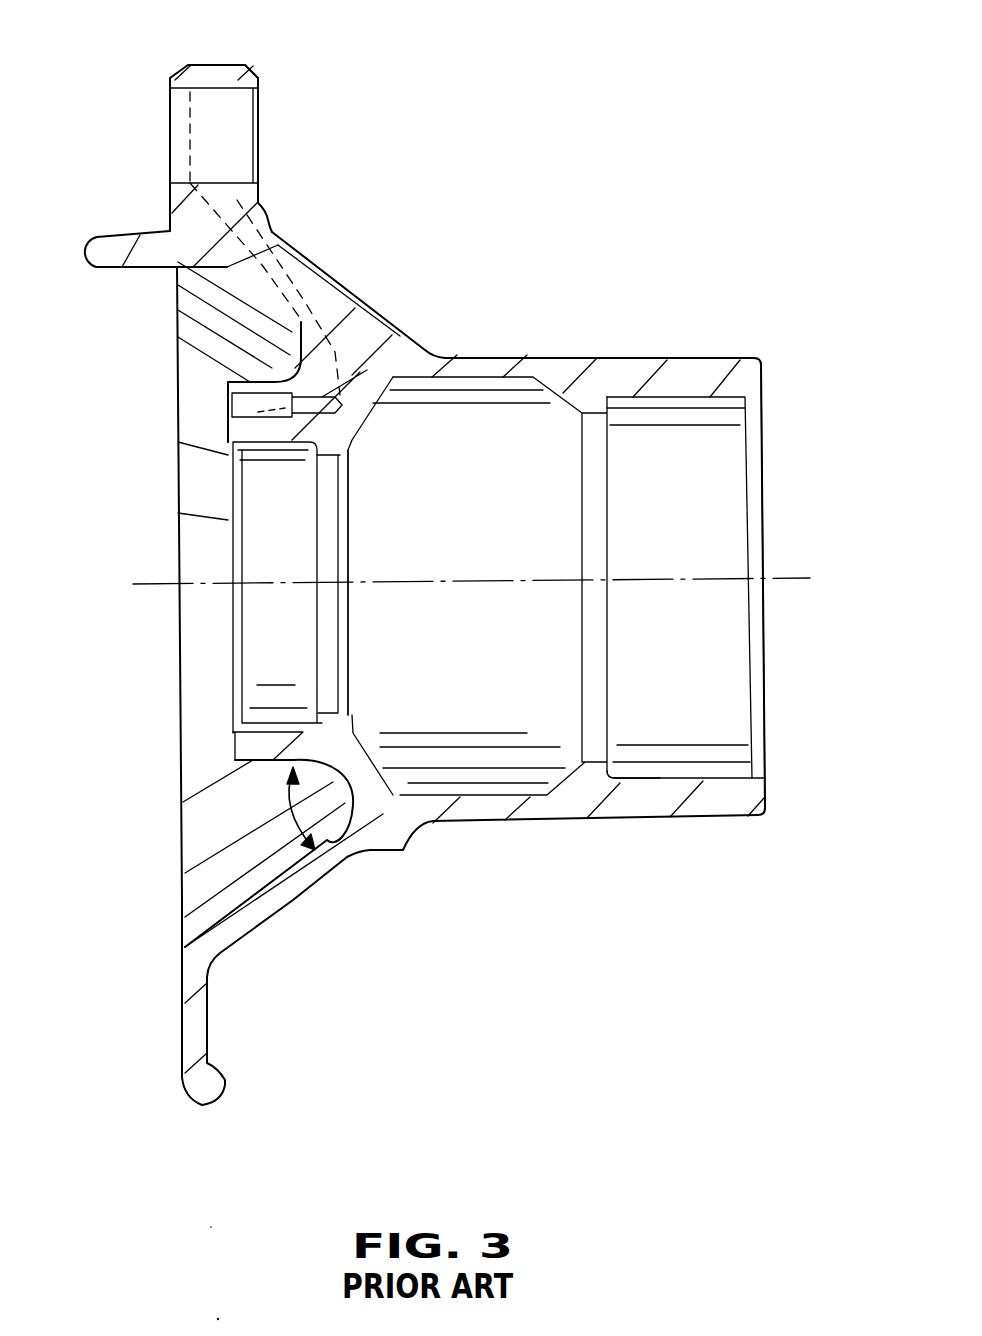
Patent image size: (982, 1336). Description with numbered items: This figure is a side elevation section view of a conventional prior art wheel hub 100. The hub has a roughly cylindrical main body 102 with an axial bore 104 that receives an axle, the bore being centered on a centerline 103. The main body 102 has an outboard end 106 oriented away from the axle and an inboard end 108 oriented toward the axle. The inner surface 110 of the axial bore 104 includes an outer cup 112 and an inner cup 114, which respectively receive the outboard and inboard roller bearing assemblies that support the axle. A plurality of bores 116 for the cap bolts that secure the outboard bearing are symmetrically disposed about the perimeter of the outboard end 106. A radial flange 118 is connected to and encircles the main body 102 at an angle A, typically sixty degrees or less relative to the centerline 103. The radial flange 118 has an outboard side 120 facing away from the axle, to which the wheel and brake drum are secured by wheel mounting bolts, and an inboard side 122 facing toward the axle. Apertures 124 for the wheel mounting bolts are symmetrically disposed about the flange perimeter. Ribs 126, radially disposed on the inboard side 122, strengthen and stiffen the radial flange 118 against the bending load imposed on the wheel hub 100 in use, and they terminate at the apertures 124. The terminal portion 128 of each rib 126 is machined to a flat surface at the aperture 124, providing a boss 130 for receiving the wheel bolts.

The wheel hub 100 is at (608, 183).
The main body 102 is at (632, 358).
The centerline 103 is at (165, 586).
The axial bore 104 is at (430, 515).
The outboard end 106 is at (228, 383).
The inboard end 108 is at (768, 368).
The inner surface 110 is at (273, 443).
The outer cup 112 is at (303, 715).
The inner cup 114 is at (620, 773).
The bores 116 is at (243, 405).
The radial flange 118 is at (168, 78).
The outboard side 120 is at (225, 330).
The inboard side 122 is at (303, 258).
The apertures 124 is at (197, 135).
The ribs 126 is at (320, 265).
The terminal portion 128 is at (273, 228).
The boss 130 is at (258, 78).
The angle A is at (285, 803).